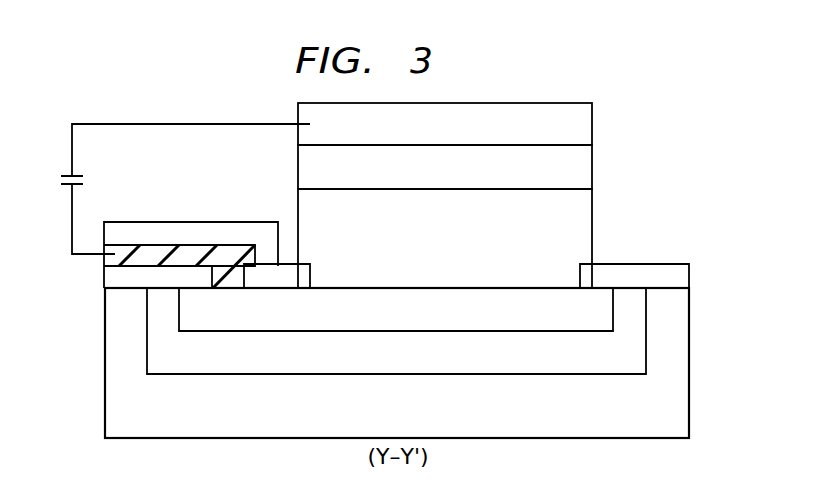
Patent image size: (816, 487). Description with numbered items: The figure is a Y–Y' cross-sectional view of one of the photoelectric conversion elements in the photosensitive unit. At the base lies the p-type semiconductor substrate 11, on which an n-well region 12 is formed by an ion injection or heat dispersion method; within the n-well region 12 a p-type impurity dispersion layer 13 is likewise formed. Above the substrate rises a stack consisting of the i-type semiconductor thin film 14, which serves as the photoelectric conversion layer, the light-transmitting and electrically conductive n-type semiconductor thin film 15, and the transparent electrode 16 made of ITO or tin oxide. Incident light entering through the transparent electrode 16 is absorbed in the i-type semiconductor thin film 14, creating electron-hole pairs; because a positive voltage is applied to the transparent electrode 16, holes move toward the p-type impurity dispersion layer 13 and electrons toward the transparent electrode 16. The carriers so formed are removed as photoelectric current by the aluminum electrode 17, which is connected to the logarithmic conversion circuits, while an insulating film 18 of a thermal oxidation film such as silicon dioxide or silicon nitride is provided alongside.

The p-type semiconductor substrate 11 is at (384, 416).
The n-well region 12 is at (384, 363).
The p-type impurity dispersion layer 13 is at (384, 320).
The i-type semiconductor thin film 14 is at (432, 250).
The n-type semiconductor thin film 15 is at (432, 178).
The transparent electrode 16 is at (432, 135).
The Al electrode 17 is at (195, 250).
The insulating film 18 is at (107, 277).